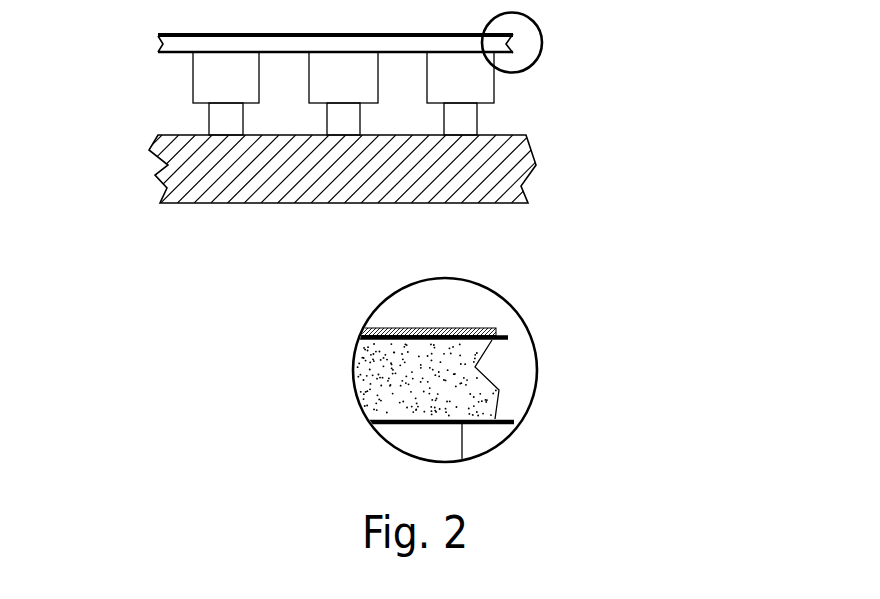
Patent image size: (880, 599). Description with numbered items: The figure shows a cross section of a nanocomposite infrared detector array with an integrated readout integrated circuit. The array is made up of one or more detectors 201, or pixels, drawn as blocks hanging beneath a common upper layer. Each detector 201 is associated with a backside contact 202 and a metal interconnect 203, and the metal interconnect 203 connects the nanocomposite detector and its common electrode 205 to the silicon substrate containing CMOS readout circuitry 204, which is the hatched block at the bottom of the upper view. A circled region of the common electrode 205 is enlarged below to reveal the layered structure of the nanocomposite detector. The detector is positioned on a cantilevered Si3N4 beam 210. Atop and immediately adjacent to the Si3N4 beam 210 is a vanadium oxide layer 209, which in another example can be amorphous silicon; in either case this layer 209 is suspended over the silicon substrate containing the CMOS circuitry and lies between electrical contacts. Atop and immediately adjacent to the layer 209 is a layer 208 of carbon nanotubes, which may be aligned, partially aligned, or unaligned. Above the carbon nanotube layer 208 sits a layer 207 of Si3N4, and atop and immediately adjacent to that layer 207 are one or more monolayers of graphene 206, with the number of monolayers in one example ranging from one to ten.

The detector 201 is at (358, 94).
The backside contact 202 is at (253, 105).
The metal interconnect 203 is at (484, 114).
The silicon substrate containing CMOS readout circuitry 204 is at (282, 163).
The common electrode 205 is at (511, 292).
The graphene monolayers 206 is at (499, 322).
The Si3N4 layer 207 is at (506, 336).
The carbon nanotube layer 208 is at (473, 379).
The vanadium oxide layer 209 is at (499, 422).
The Si3N4 beam 210 is at (583, 464).